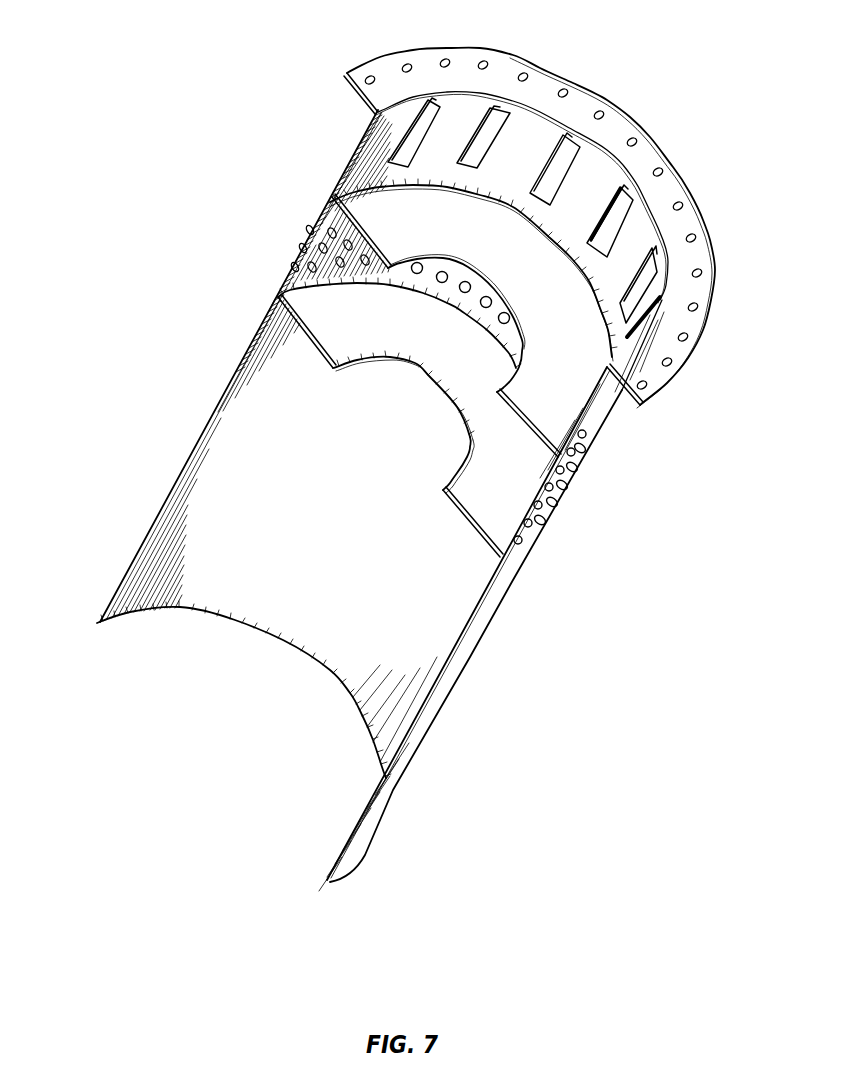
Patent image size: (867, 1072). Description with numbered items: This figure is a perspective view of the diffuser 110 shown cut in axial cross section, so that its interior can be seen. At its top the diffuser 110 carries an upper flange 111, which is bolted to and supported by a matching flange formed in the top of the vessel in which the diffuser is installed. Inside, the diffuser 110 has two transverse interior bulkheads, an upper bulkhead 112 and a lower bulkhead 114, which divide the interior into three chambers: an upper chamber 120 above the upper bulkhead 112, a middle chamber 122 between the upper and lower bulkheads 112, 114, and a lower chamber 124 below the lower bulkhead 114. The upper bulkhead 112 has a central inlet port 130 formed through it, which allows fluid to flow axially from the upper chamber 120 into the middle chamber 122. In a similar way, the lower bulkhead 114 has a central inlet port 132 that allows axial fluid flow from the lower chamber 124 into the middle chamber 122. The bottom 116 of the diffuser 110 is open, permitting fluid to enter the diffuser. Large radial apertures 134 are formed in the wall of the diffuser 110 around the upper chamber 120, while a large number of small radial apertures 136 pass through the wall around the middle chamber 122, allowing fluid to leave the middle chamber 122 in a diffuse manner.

The diffuser 110 is at (116, 594).
The upper flange 111 is at (360, 70).
The upper bulkhead 112 is at (331, 204).
The lower bulkhead 114 is at (300, 333).
The bottom 116 is at (180, 607).
The upper chamber 120 is at (360, 170).
The middle chamber 122 is at (280, 292).
The lower chamber 124 is at (363, 582).
The central inlet port 130 is at (522, 348).
The central inlet port 132 is at (468, 442).
The large radial apertures 134 is at (397, 142).
The small radial apertures 136 is at (293, 258).